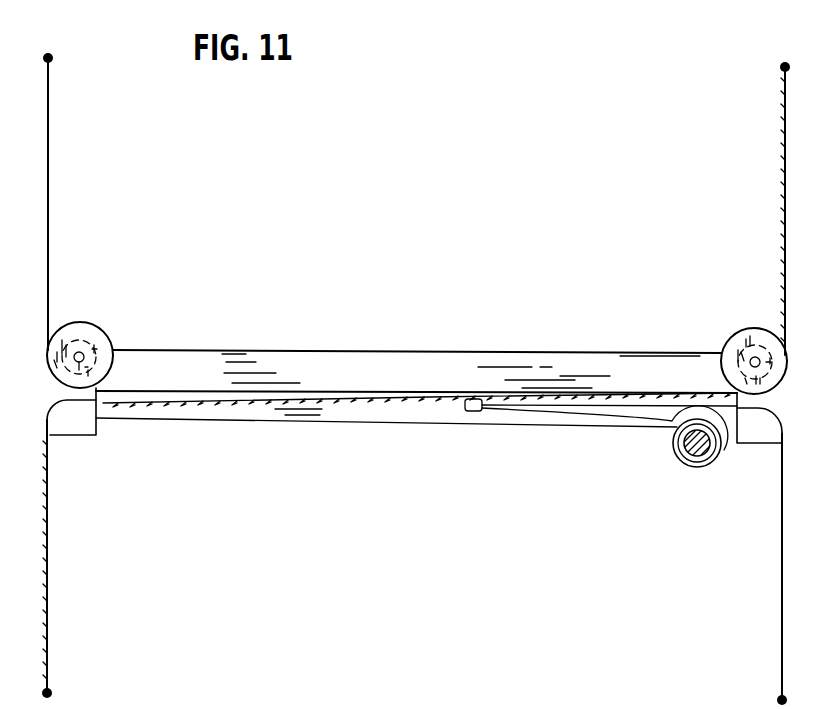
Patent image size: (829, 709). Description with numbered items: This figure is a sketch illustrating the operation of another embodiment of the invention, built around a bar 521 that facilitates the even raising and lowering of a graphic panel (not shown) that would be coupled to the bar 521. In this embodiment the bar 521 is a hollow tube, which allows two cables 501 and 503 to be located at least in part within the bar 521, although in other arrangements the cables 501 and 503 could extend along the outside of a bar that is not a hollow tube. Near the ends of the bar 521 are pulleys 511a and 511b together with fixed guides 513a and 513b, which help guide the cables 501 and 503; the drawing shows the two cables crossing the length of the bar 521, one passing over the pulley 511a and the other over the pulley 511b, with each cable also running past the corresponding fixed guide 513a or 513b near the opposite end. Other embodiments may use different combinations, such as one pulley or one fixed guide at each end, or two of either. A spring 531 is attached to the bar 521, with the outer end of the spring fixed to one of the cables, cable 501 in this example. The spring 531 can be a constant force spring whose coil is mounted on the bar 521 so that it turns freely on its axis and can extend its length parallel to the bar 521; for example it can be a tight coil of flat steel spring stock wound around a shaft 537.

The cable 501 is at (48, 175).
The cable 503 is at (784, 207).
The pulley 511a is at (92, 326).
The pulley 511b is at (728, 336).
The bar 521 is at (402, 350).
The fixed guide 513a is at (76, 436).
The fixed guide 513b is at (752, 444).
The spring 531 is at (692, 463).
The shaft 537 is at (683, 448).